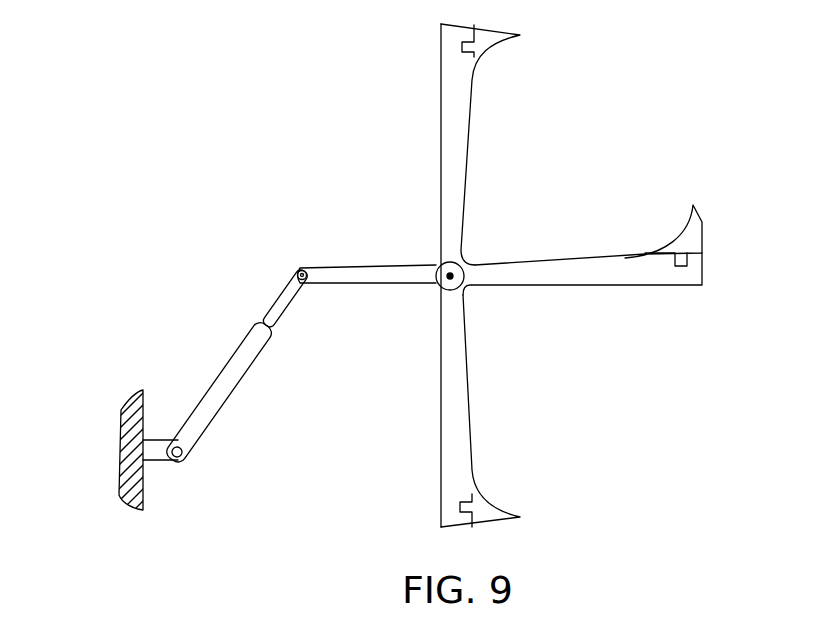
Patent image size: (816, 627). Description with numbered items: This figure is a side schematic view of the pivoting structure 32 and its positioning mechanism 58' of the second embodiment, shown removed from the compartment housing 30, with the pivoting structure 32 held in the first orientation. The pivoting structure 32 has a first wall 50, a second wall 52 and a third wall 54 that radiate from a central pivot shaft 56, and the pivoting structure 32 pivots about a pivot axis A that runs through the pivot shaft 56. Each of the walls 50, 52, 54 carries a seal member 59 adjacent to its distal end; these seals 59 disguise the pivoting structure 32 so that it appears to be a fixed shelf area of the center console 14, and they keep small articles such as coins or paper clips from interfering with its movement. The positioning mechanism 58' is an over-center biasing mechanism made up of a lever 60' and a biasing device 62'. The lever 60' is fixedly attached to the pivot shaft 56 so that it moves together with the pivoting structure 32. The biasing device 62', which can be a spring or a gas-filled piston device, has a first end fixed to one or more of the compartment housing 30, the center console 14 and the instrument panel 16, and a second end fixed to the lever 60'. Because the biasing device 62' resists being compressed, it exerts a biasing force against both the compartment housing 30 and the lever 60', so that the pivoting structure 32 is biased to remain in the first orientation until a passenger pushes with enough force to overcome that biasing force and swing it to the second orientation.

The pivoting structure 32 is at (441, 118).
The first wall 50 is at (455, 152).
The second wall 52 is at (571, 270).
The third wall 54 is at (453, 402).
The pivot shaft 56 is at (435, 278).
The seal members 59 is at (493, 50).
The pivot axis A is at (452, 278).
The lever 60' is at (367, 251).
The positioning mechanism 58' is at (237, 368).
The biasing device 62' is at (219, 394).
The compartment housing 30 is at (125, 429).
The center console 14 is at (146, 450).
The instrument panel 16 is at (130, 427).